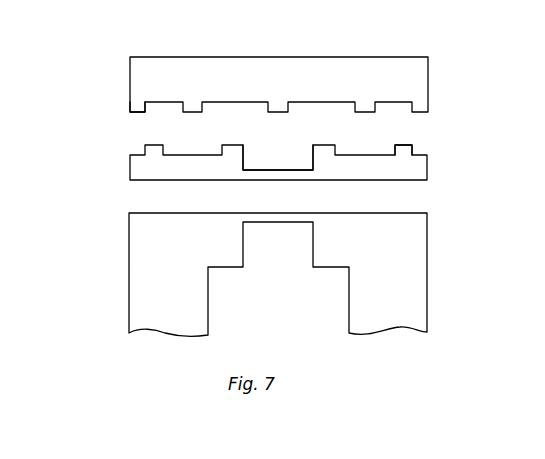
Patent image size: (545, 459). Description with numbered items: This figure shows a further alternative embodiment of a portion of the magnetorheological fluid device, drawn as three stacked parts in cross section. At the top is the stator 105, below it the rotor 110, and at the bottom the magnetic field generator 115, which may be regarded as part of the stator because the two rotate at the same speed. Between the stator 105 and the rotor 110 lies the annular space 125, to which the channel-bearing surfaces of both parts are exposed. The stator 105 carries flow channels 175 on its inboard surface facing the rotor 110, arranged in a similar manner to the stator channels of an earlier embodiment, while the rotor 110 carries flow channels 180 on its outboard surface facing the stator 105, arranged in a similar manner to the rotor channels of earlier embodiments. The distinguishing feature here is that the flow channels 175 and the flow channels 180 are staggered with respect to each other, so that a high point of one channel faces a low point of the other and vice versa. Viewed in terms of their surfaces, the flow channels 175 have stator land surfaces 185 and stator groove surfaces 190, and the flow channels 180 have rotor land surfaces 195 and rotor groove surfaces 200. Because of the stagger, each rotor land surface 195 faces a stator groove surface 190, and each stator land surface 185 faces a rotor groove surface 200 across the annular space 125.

The stator 105 is at (137, 78).
The land surface 185 is at (135, 113).
The groove surface 190 is at (160, 104).
The flow channel 175 is at (226, 110).
The flow channel 180 is at (347, 153).
The groove surface 200 is at (373, 155).
The land surface 195 is at (403, 145).
The annular space 125 is at (427, 128).
The rotor 110 is at (137, 172).
The magnetic field generator 115 is at (380, 281).